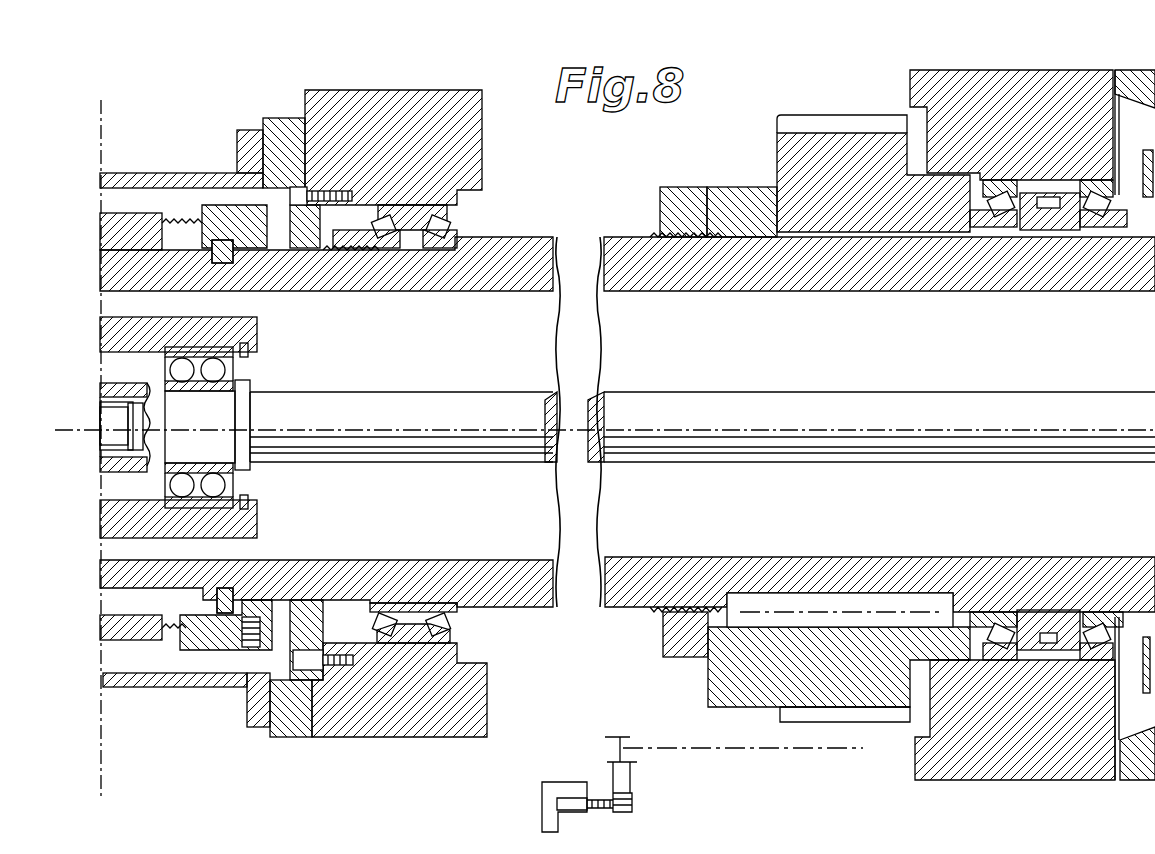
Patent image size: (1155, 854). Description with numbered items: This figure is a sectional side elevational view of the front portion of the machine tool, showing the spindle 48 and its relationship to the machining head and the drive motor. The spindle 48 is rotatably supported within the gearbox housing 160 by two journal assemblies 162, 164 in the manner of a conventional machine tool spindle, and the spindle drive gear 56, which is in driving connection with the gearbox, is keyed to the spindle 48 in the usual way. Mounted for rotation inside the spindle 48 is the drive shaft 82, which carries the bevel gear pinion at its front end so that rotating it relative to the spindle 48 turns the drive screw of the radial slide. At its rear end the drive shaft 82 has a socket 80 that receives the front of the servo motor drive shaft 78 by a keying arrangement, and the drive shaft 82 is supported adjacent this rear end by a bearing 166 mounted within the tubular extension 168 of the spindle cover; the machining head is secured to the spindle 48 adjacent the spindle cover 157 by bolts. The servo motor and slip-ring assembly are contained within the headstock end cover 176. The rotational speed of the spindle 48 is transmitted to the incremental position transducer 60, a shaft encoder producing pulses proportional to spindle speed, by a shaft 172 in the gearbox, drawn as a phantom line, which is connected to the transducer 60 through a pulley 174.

The spindle 48 is at (540, 253).
The drive gear 56 is at (793, 140).
The incremental position transducer 60 is at (555, 792).
The drive shaft 78 is at (112, 415).
The socket 80 is at (98, 442).
The drive shaft 82 is at (478, 405).
The spindle cover 157 is at (1135, 80).
The gearbox housing 160 is at (943, 83).
The journal assembly 162 is at (417, 215).
The journal assembly 164 is at (1050, 217).
The bearing 166 is at (213, 369).
The tubular extension 168 is at (237, 325).
The shaft 172 is at (783, 748).
The pulley 174 is at (620, 778).
The headstock end cover 176 is at (178, 181).